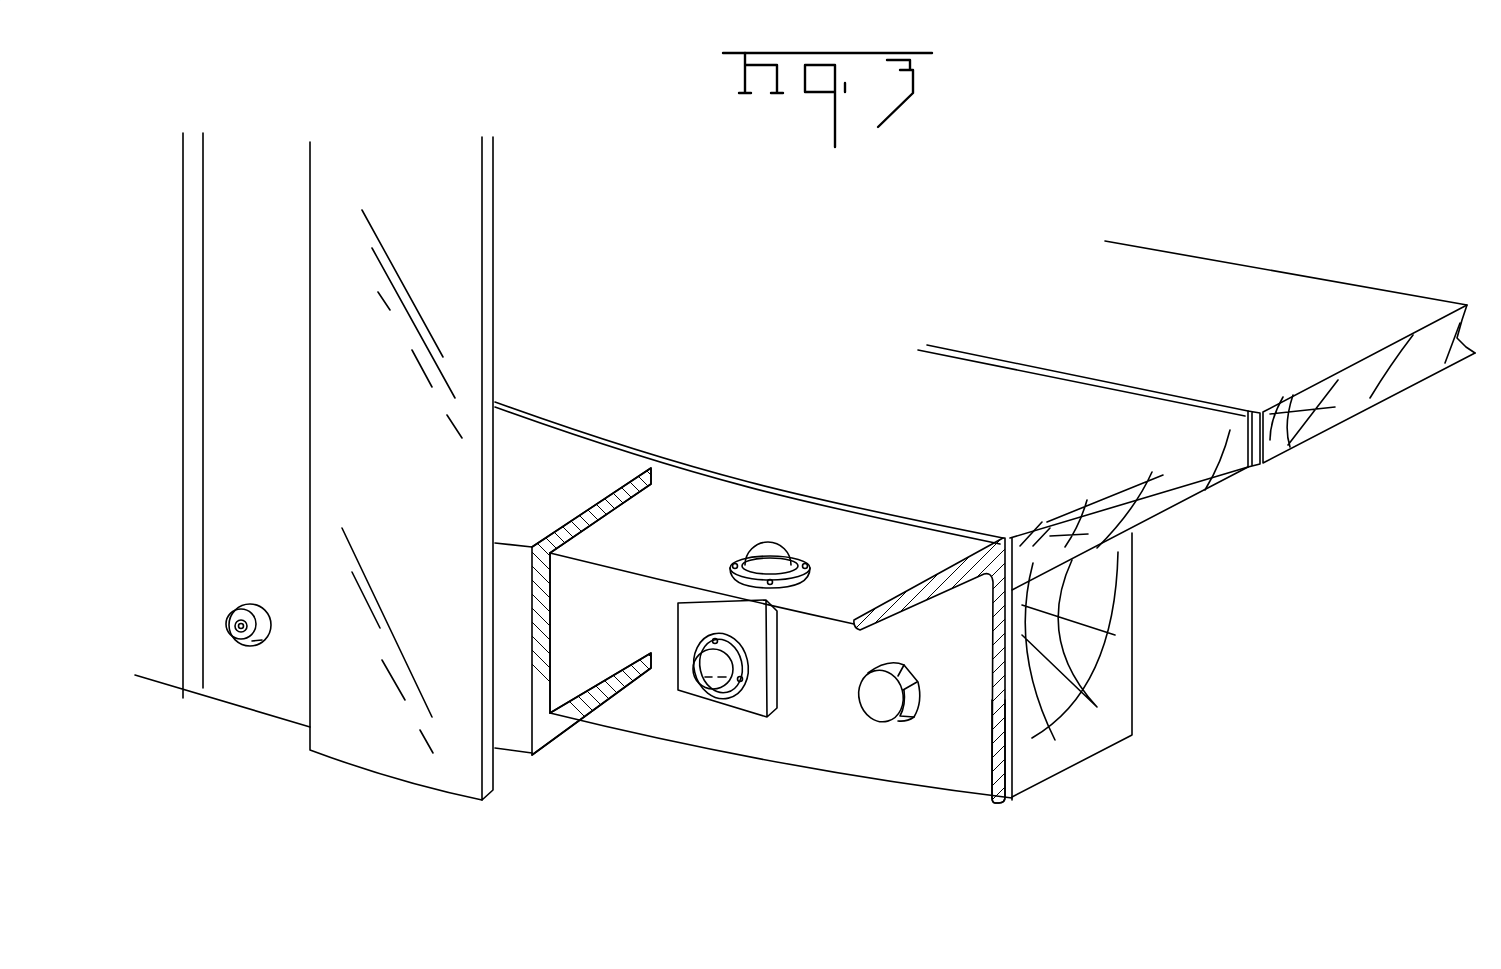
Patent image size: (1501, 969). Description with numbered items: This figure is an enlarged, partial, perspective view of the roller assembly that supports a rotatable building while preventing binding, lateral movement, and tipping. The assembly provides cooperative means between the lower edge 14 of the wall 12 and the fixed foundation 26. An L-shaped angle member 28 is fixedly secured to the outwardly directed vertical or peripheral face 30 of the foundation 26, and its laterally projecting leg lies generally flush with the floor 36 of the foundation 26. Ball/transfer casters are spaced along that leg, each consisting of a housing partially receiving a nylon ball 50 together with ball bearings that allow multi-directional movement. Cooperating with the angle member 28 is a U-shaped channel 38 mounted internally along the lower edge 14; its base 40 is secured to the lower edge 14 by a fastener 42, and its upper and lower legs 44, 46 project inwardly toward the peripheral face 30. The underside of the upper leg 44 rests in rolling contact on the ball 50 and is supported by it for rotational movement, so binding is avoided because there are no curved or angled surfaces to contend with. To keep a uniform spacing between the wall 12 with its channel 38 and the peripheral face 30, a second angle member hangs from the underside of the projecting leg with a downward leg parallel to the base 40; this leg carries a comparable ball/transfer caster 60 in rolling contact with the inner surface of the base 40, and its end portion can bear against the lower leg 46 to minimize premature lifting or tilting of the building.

The wall 12 is at (497, 268).
The lower edge 14 is at (415, 778).
The fixed foundation 26 is at (857, 380).
The L-shaped angle member 28 is at (996, 628).
The peripheral face 30 is at (1007, 725).
The floor 36 is at (1133, 502).
The U-shaped channel 38 is at (520, 748).
The base 40 is at (552, 623).
The fastener 42 is at (240, 642).
The upper leg 44 is at (603, 500).
The lower leg 46 is at (598, 697).
The ball 50 is at (783, 546).
The ball/transfer caster 60 is at (711, 674).